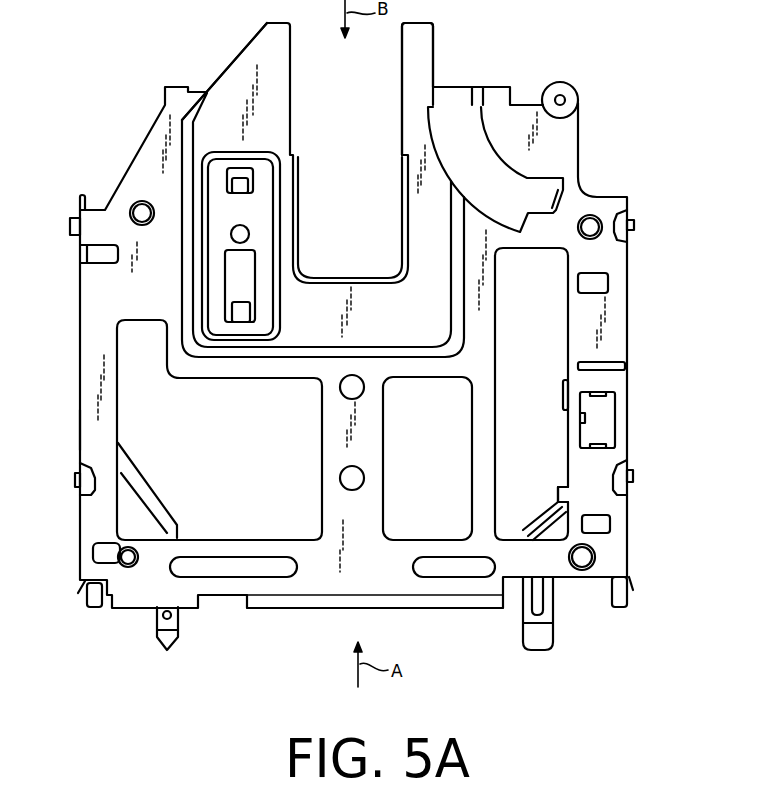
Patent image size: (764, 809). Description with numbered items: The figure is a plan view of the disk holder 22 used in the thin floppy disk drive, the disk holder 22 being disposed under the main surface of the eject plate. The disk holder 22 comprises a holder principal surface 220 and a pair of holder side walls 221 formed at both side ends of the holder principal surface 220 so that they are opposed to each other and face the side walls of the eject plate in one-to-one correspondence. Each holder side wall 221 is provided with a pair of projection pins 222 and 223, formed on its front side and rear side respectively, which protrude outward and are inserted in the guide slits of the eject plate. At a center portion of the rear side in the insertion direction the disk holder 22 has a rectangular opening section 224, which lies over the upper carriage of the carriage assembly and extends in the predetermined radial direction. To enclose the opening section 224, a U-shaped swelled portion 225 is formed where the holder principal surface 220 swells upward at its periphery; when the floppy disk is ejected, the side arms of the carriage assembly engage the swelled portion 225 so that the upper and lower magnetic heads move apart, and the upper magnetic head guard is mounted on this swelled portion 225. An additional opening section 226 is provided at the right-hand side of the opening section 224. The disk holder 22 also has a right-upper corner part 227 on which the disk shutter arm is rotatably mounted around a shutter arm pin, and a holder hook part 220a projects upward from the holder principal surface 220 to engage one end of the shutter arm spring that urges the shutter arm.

The disk holder 22 is at (88, 352).
The holder principal surface 220 is at (303, 587).
The holder hook part 220a is at (562, 495).
The holder side walls 221 is at (80, 430).
The projection pin 222 is at (70, 227).
The projection pin 223 is at (75, 481).
The rectangular opening section 224 is at (402, 80).
The U-shaped swelled portion 225 is at (248, 73).
The additional opening section 226 is at (487, 135).
The right-upper corner part 227 is at (580, 97).